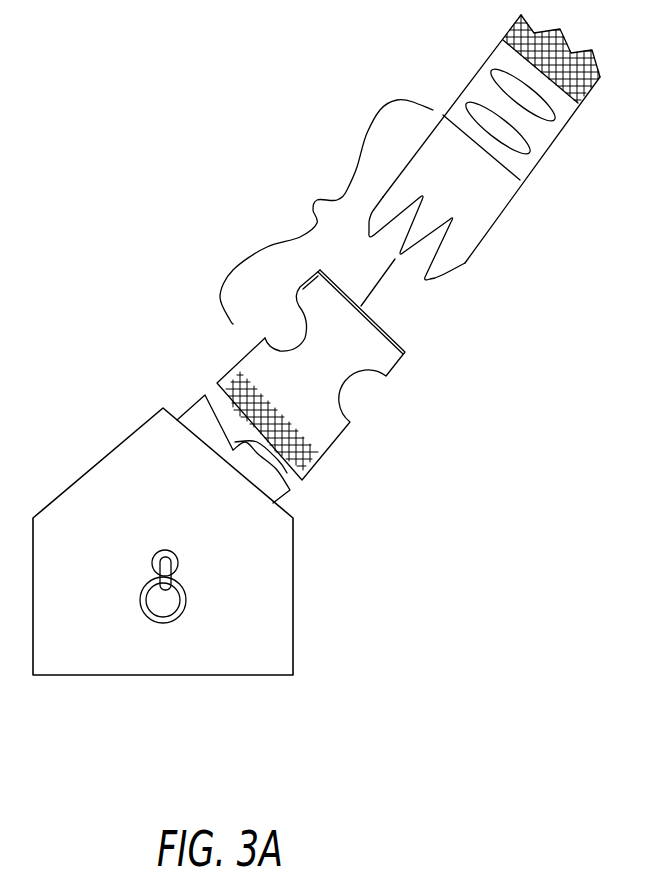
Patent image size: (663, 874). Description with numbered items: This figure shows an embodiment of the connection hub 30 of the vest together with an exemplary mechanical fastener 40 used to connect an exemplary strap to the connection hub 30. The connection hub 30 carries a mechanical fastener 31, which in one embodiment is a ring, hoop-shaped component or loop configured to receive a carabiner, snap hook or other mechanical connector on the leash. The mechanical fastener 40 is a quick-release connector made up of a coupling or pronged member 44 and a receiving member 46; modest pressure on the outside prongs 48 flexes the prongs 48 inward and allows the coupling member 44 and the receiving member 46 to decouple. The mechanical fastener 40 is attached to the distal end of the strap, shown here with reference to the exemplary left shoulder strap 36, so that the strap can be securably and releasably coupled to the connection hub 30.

The connection hub 30 is at (282, 628).
The mechanical fastener 31 is at (185, 603).
The left shoulder strap 36 is at (485, 445).
The mechanical fastener 40 is at (305, 301).
The coupling member 44 is at (483, 213).
The receiving member 46 is at (380, 353).
The outside prongs 48 is at (382, 216).